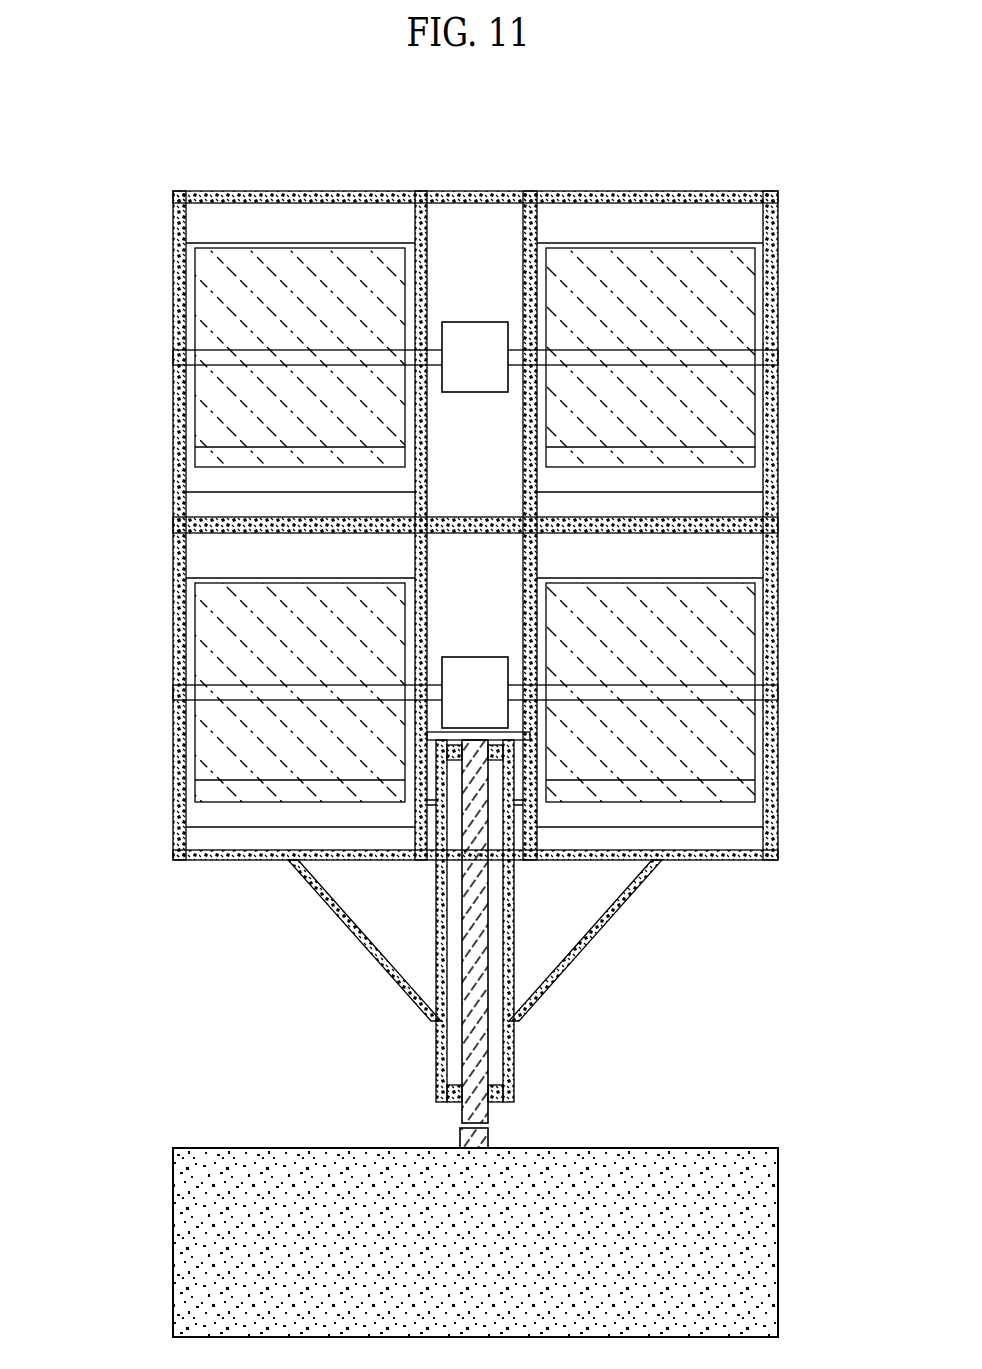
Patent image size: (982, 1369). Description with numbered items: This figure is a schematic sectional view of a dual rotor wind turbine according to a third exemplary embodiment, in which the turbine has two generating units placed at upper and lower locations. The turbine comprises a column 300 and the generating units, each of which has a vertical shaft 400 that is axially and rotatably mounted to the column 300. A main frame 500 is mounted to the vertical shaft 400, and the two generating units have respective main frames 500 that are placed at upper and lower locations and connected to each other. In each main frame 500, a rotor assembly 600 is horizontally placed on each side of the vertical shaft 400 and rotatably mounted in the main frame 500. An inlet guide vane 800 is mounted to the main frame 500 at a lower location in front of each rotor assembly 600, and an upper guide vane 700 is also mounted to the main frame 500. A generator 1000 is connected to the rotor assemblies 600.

The column 300 is at (488, 1082).
The vertical shaft 400 is at (514, 943).
The main frame 500 is at (778, 297).
The rotor assembly 600 is at (650, 230).
The upper guide vane 700 is at (285, 220).
The inlet guide vane 800 is at (760, 470).
The generator 1000 is at (478, 337).